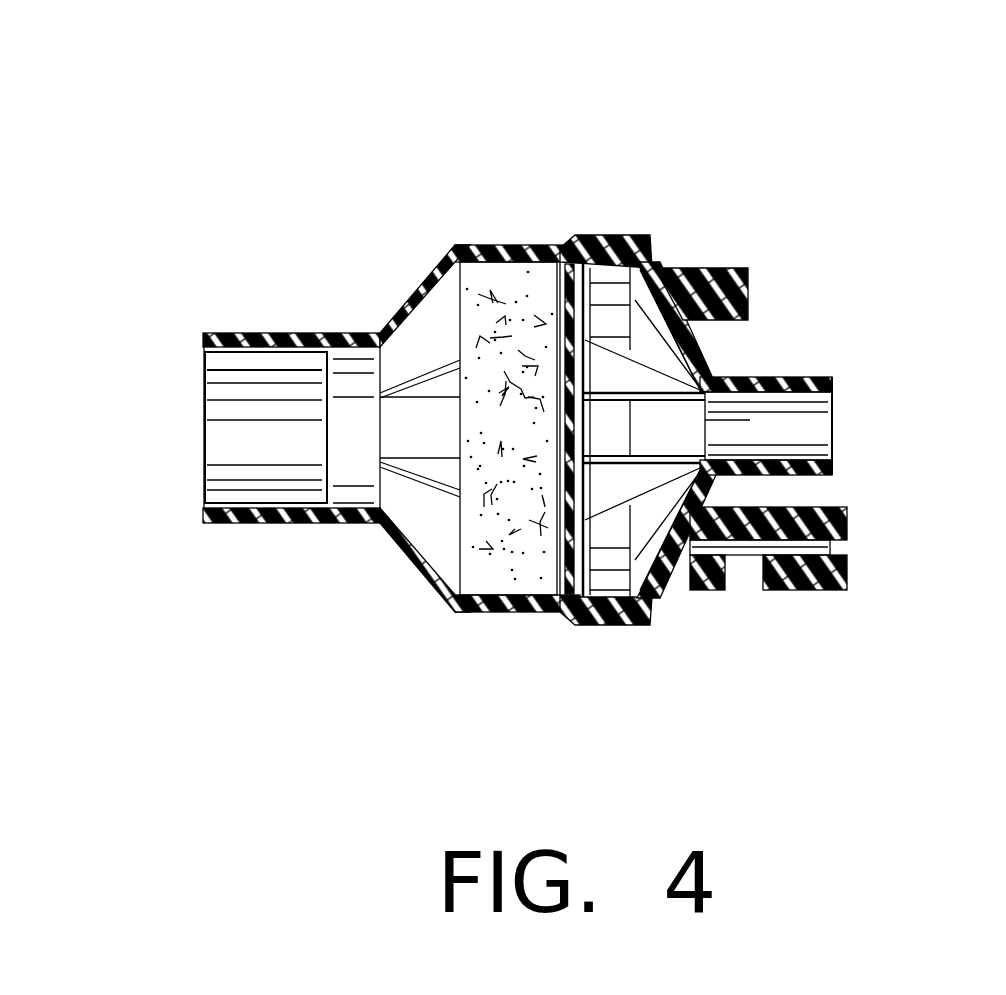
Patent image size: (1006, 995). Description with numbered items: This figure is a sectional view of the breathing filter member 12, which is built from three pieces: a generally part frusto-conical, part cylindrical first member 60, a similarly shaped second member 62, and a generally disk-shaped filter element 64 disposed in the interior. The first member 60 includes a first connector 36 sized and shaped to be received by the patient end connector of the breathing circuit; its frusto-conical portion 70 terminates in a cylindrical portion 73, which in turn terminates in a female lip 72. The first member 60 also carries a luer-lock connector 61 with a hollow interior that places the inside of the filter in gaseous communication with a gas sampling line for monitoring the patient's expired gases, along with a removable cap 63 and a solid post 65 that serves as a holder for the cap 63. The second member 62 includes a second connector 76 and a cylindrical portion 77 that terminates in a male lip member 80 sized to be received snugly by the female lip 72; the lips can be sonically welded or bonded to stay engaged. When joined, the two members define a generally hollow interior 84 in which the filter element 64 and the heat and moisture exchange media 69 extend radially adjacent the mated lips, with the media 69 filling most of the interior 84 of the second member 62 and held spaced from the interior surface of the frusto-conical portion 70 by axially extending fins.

The breathing filter member 12 is at (748, 139).
The first member 60 is at (859, 295).
The second member 62 is at (250, 275).
The second connector 76 is at (195, 551).
The frusto-conical portion 70 is at (455, 250).
The cylindrical portion 77 is at (535, 613).
The hollow interior 84 is at (543, 431).
The heat and moisture exchange media 69 is at (522, 265).
The female lip 72 is at (625, 242).
The male lip member 80 is at (655, 620).
The cylindrical portion 73 is at (637, 250).
The solid post 65 is at (712, 268).
The filter element 64 is at (648, 428).
The first connector 36 is at (825, 475).
The removable cap 63 is at (823, 590).
The luer-lock connector 61 is at (740, 590).